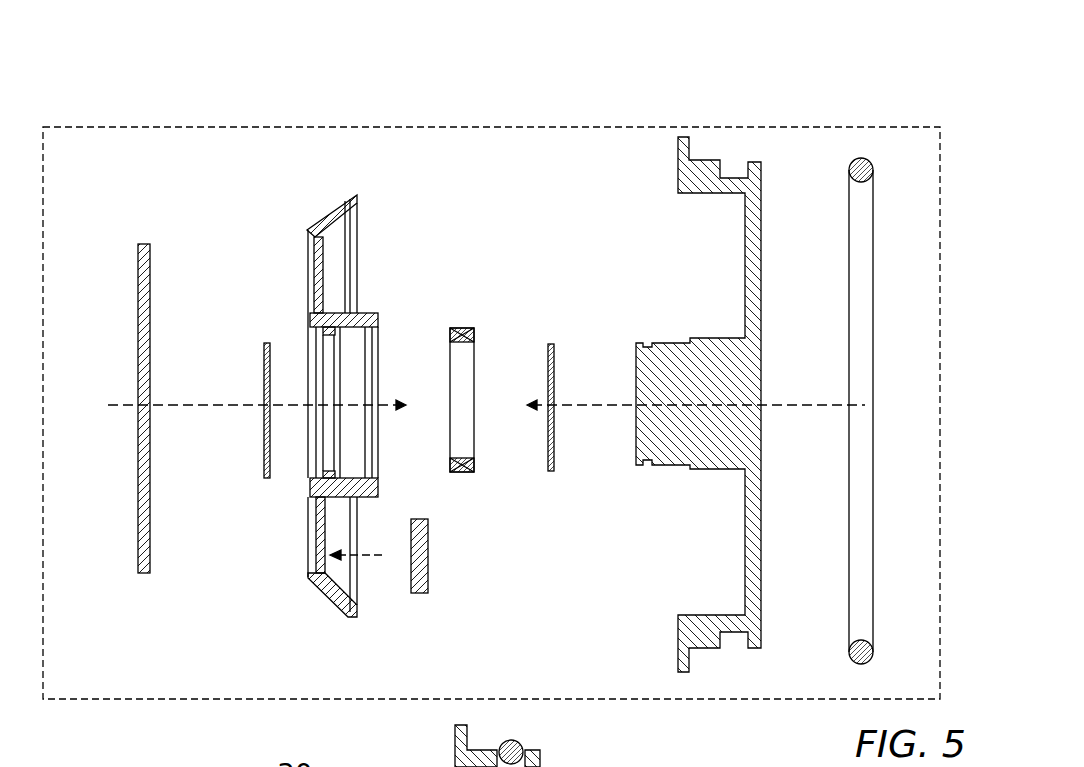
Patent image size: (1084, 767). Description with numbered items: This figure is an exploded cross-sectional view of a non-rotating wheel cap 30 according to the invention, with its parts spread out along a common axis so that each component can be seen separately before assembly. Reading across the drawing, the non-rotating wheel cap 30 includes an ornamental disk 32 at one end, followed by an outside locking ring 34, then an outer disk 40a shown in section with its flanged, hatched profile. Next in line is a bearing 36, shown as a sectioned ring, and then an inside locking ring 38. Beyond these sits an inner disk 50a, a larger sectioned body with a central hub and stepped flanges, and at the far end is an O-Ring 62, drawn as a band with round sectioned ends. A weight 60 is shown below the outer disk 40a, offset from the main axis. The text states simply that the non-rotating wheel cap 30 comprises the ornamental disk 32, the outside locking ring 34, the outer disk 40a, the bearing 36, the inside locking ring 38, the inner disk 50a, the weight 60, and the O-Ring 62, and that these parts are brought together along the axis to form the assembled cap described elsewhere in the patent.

The non-rotating wheel cap 30 is at (491, 353).
The ornamental disk 32 is at (142, 362).
The outside locking ring 34 is at (263, 348).
The bearing 36 is at (462, 328).
The inside locking ring 38 is at (546, 346).
The outer disk 40a is at (281, 221).
The inner disk 50a is at (634, 240).
The weight 60 is at (429, 557).
The O-Ring 62 is at (861, 291).